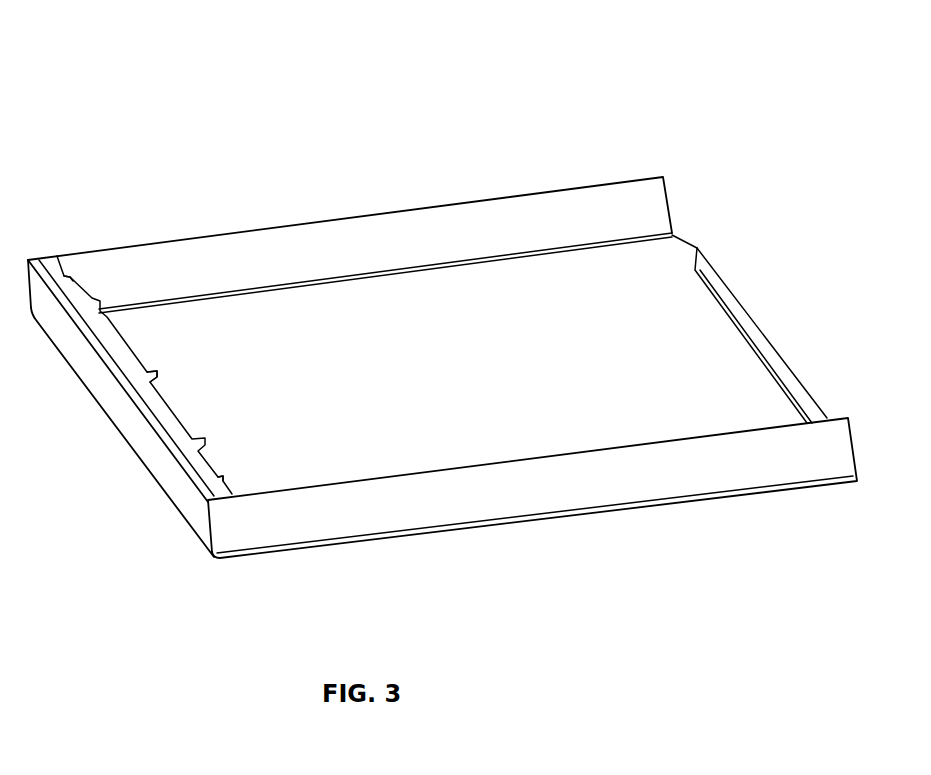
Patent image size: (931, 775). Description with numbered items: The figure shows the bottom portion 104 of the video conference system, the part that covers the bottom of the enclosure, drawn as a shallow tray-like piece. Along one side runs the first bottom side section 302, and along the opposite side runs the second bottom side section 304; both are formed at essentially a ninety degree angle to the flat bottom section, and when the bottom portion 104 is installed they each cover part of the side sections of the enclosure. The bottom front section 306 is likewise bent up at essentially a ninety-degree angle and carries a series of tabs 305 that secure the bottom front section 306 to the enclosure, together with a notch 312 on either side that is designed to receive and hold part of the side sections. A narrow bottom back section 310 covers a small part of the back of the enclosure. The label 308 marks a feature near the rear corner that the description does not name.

The bottom portion 104 is at (462, 98).
The first bottom side section 302 is at (577, 487).
The second bottom side section 304 is at (445, 218).
The tabs 305 is at (165, 372).
The bottom front section 306 is at (128, 423).
The corner opening 308 is at (658, 278).
The bottom back section 310 is at (733, 298).
The notch 312 is at (65, 265).